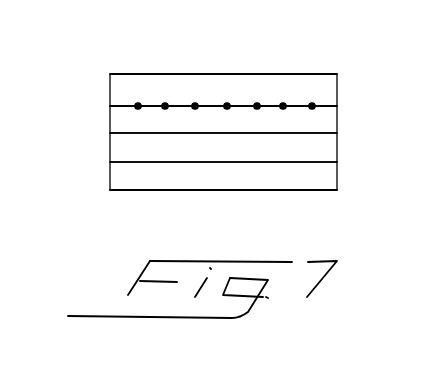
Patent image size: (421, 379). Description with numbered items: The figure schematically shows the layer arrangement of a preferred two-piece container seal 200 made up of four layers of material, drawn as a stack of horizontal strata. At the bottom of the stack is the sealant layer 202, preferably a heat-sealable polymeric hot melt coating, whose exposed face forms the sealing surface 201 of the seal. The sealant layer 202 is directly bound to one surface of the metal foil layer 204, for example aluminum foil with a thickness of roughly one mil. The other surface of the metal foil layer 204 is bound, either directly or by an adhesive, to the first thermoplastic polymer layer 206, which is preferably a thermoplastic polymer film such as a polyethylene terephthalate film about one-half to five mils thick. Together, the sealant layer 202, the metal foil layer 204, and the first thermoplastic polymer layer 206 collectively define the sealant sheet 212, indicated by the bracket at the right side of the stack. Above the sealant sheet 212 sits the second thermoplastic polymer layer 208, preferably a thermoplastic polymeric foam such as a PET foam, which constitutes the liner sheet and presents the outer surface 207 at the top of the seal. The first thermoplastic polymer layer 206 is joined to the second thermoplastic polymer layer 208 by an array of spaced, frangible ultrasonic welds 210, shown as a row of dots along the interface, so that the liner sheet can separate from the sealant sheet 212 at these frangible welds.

The two-piece container seal 200 is at (128, 200).
The sealing surface 201 is at (299, 205).
The sealant layer 202 is at (118, 178).
The metal foil layer 204 is at (118, 148).
The first thermoplastic polymer layer 206 is at (118, 120).
The outer surface 207 is at (207, 73).
The second thermoplastic polymer layer 208 is at (118, 90).
The frangible ultrasonic welds 210 is at (283, 106).
The sealant sheet 212 is at (340, 107).